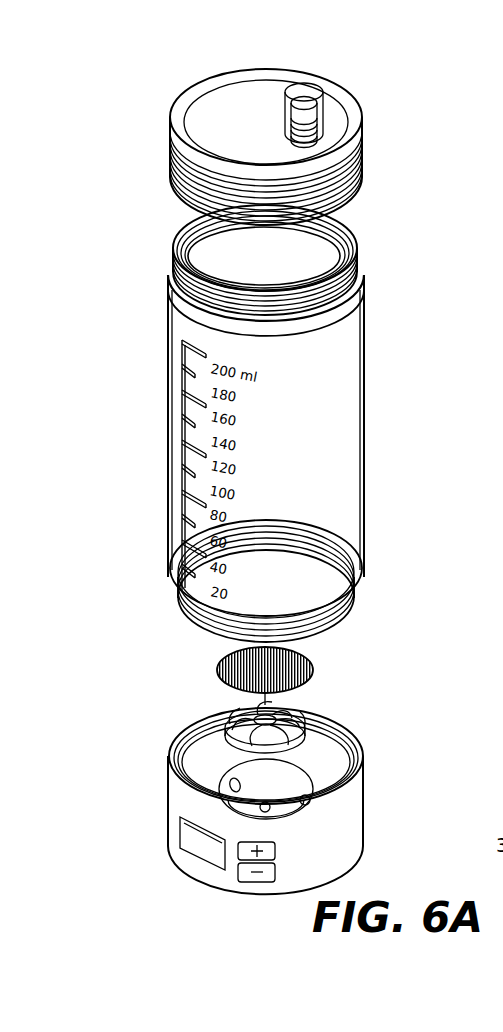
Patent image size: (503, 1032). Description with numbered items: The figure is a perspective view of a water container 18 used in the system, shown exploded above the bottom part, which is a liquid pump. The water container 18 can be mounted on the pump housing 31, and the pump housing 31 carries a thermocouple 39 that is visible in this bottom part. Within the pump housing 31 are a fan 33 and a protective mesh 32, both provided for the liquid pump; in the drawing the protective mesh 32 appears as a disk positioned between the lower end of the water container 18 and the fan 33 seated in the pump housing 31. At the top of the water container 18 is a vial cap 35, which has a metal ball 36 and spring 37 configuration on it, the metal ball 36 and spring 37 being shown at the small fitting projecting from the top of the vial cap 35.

The water container 18 is at (228, 250).
The pump housing 31 is at (350, 840).
The protective mesh 32 is at (313, 665).
The fan 33 is at (300, 722).
The vial cap 35 is at (330, 156).
The metal ball 36 is at (312, 110).
The spring 37 is at (320, 120).
The thermocouple 39 is at (310, 800).